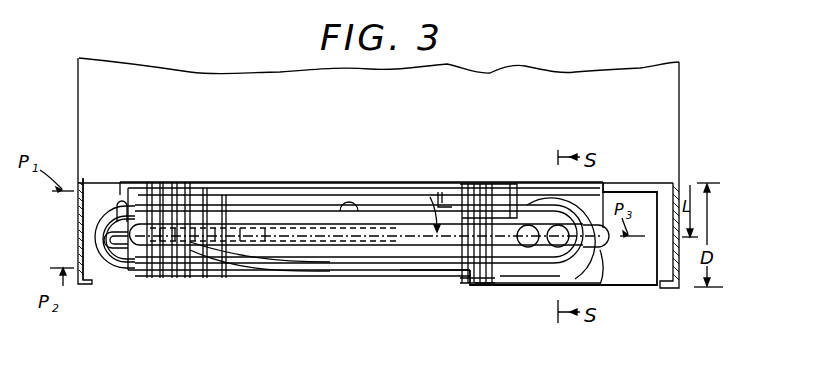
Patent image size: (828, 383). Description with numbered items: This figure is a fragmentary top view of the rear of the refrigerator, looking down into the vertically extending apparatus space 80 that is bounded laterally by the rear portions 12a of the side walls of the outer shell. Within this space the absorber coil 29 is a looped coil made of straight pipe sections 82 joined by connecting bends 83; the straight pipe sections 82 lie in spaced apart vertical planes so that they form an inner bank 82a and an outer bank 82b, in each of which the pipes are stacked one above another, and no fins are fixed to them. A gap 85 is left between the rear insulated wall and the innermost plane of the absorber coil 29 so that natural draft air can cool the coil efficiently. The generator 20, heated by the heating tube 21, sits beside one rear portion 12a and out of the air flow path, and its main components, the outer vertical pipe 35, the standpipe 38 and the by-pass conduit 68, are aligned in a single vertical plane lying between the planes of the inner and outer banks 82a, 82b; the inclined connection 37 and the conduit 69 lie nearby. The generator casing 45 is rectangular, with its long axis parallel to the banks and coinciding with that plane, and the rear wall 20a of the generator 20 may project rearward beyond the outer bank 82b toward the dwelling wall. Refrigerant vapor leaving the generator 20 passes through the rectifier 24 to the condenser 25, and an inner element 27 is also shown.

The rear portions of lateral side walls of the outer shell 12a is at (80, 230).
The generator 20 is at (656, 288).
The rear wall of the generator 20a is at (543, 287).
The heating tube 21 is at (545, 230).
The air-cooled rectifier 24 is at (391, 240).
The air-cooled condenser 25 is at (576, 214).
The inner member 27 is at (346, 270).
The absorber coil 29 is at (112, 190).
The outer vertical pipe 35 is at (602, 243).
The upwardly inclined connection 37 is at (595, 270).
The vertical standpipe 38 is at (515, 272).
The generator casing 45 is at (600, 288).
The conduit 68 is at (497, 185).
The conduit 69 is at (453, 278).
The apparatus space 80 is at (92, 199).
The straight pipe sections 82 is at (216, 270).
The inner bank 82a is at (331, 190).
The outer bank 82b is at (400, 270).
The connecting bends 83 is at (96, 255).
The gap 85 is at (263, 192).